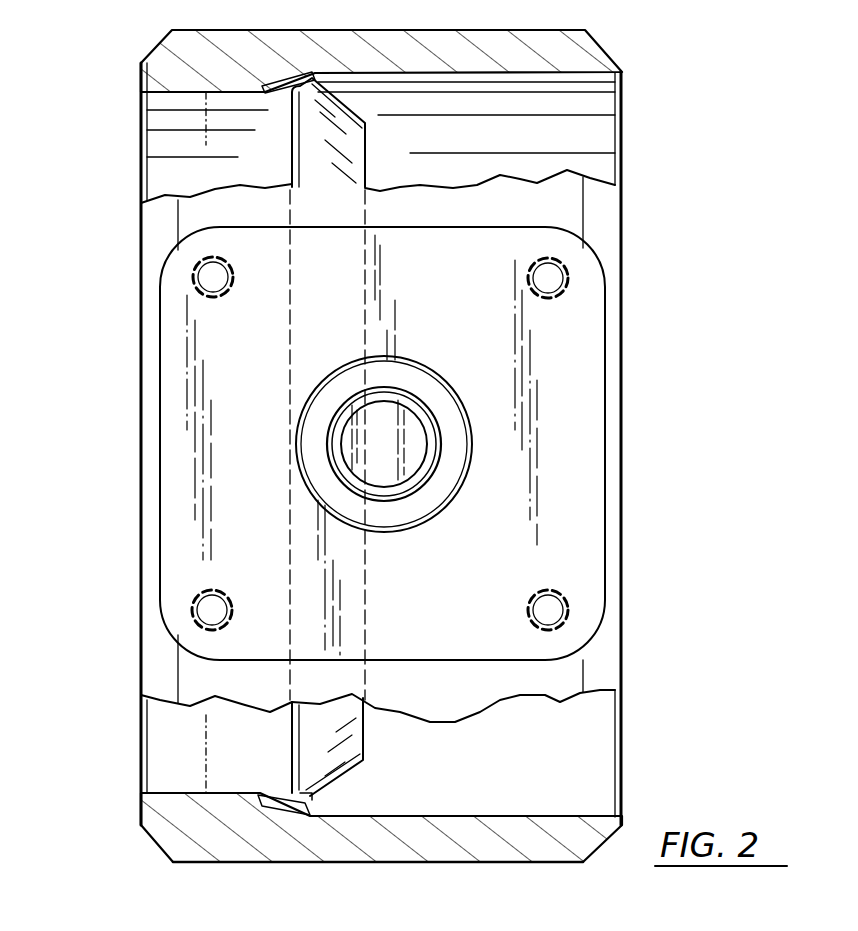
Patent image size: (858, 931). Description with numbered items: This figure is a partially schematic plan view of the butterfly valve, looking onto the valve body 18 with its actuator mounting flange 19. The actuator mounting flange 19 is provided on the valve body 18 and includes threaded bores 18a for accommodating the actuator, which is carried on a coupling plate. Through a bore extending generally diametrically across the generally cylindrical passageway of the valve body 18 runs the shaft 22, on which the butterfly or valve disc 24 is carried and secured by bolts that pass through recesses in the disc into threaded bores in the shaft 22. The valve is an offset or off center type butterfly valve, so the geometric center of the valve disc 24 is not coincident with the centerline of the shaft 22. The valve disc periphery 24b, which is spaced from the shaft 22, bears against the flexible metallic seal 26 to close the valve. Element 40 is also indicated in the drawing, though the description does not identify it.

The valve body 18 is at (600, 42).
The threaded bores 18a is at (215, 285).
The actuator mounting flange 19 is at (593, 263).
The shaft 22 is at (408, 413).
The butterfly or valve disc 24 is at (365, 130).
The valve disc periphery 24b is at (318, 796).
The flexible metallic seal 26 is at (278, 792).
The bottom wall 40 is at (215, 860).